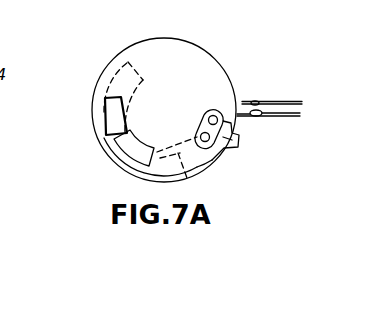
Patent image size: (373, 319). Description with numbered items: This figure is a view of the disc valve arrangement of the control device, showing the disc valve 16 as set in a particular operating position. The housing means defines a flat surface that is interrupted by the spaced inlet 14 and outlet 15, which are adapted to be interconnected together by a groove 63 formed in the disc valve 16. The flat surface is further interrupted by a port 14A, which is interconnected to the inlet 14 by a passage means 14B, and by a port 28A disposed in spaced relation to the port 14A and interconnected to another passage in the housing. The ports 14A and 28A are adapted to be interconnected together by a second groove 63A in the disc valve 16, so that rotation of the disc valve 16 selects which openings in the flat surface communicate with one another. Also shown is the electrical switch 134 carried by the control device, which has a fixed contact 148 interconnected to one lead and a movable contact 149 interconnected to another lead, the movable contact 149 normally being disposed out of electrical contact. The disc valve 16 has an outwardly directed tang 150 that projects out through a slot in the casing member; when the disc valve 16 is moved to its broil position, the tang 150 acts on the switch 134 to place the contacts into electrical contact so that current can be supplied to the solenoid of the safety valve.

The disc valve member 16 is at (188, 56).
The inlet 14 is at (130, 162).
The port 14A is at (226, 163).
The passage means 14B is at (188, 180).
The groove 63 is at (104, 113).
The outlet 15 is at (128, 133).
The port 28A is at (216, 112).
The groove 63A is at (238, 125).
The tang 150 is at (240, 139).
The fixed contact 148 is at (255, 100).
The movable contact 149 is at (300, 114).
The electrical switch 134 is at (298, 85).